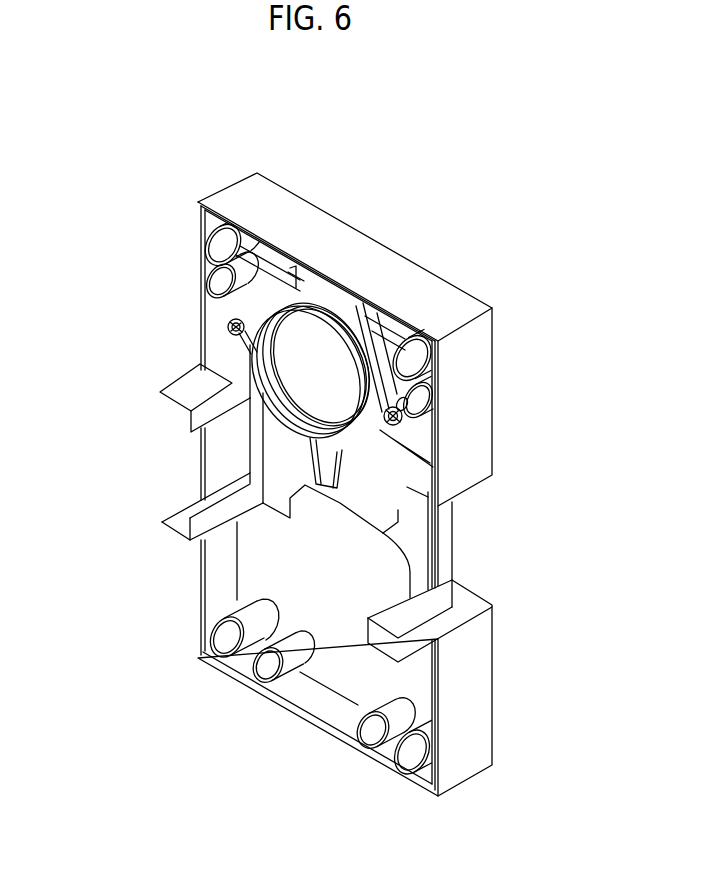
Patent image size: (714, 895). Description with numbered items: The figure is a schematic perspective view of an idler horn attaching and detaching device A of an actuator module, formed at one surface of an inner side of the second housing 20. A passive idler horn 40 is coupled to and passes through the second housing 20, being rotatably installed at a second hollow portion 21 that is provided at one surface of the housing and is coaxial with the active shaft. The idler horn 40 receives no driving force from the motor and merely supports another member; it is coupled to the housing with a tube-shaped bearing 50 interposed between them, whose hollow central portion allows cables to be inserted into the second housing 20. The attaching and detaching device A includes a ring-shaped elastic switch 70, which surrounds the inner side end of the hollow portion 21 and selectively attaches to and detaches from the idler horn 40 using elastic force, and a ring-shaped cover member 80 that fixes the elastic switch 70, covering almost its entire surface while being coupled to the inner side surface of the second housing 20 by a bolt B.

The second housing 20 is at (427, 295).
The second hollow portion 21 is at (322, 365).
The passive idler horn 40 is at (283, 318).
The tube-shaped bearing 50 is at (310, 312).
The ring-shaped elastic switch 70 is at (358, 518).
The ring-shaped cover member 80 is at (264, 366).
The idler horn attaching and detaching device A is at (86, 352).
The bolt B is at (232, 328).